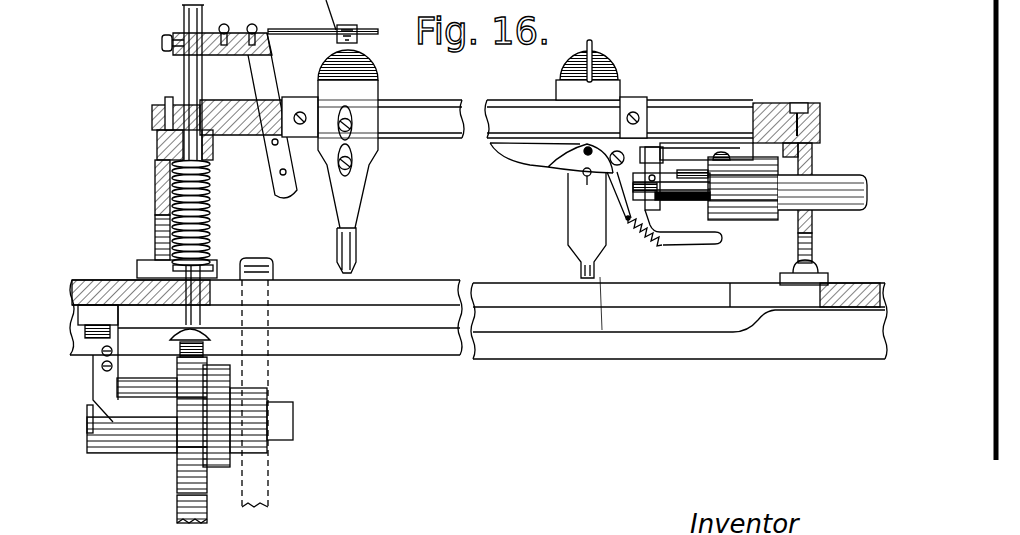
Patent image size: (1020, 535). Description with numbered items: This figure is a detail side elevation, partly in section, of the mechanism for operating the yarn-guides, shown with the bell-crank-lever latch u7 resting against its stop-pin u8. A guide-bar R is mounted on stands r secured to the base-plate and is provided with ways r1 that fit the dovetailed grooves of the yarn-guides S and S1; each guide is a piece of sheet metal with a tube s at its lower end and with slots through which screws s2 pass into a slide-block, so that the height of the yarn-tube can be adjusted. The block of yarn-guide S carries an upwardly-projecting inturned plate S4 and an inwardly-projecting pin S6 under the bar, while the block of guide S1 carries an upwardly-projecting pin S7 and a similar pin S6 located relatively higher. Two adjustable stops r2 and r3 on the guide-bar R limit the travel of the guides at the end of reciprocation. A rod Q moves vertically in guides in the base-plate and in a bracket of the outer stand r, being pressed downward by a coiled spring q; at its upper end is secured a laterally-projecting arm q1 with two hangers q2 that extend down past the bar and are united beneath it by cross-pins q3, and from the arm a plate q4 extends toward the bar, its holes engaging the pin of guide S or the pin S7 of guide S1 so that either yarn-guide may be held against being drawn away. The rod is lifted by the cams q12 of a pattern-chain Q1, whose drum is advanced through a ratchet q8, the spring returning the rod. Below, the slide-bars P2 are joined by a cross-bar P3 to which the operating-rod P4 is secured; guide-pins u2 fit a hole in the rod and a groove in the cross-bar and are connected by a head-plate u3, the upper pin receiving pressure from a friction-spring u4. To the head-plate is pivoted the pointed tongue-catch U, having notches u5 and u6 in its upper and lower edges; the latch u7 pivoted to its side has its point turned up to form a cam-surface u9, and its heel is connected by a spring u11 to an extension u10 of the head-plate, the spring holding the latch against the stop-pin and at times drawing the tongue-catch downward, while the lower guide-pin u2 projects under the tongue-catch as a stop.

The rod Q is at (183, 72).
The pattern-chain Q1 is at (177, 490).
The spring q is at (211, 214).
The laterally-projecting arm q1 is at (236, 44).
The hangers q2 is at (259, 80).
The cross-pins q3 is at (272, 143).
The plate q4 is at (284, 30).
The ratchet q8 is at (219, 467).
The cams q12 is at (177, 468).
The stands r is at (153, 183).
The ways r1 is at (266, 235).
The outer stop r2 is at (297, 97).
The inner stop r3 is at (638, 100).
The guide-bar R is at (452, 100).
The yarn-guide S is at (362, 72).
The yarn-guide S1 is at (605, 78).
The screws s2 is at (349, 110).
The inturned plate S4 is at (347, 22).
The inwardly-projecting pin S6 is at (582, 169).
The upwardly-projecting pin S7 is at (593, 48).
The tube s is at (352, 266).
The tongue-catch U is at (518, 156).
The guide-pins u2 is at (683, 157).
The head-plate u3 is at (656, 150).
The friction-spring u4 is at (722, 154).
The notch u5 is at (580, 154).
The notch u6 is at (583, 175).
The bell-crank-lever latch u7 is at (612, 177).
The stop-pin u8 is at (646, 176).
The cam-surface u9 is at (586, 148).
The extension u10 is at (705, 240).
The spring u11 is at (645, 234).
The slide-bars P2 is at (700, 204).
The cross-bar P3 is at (758, 215).
The operating-rod P4 is at (843, 176).